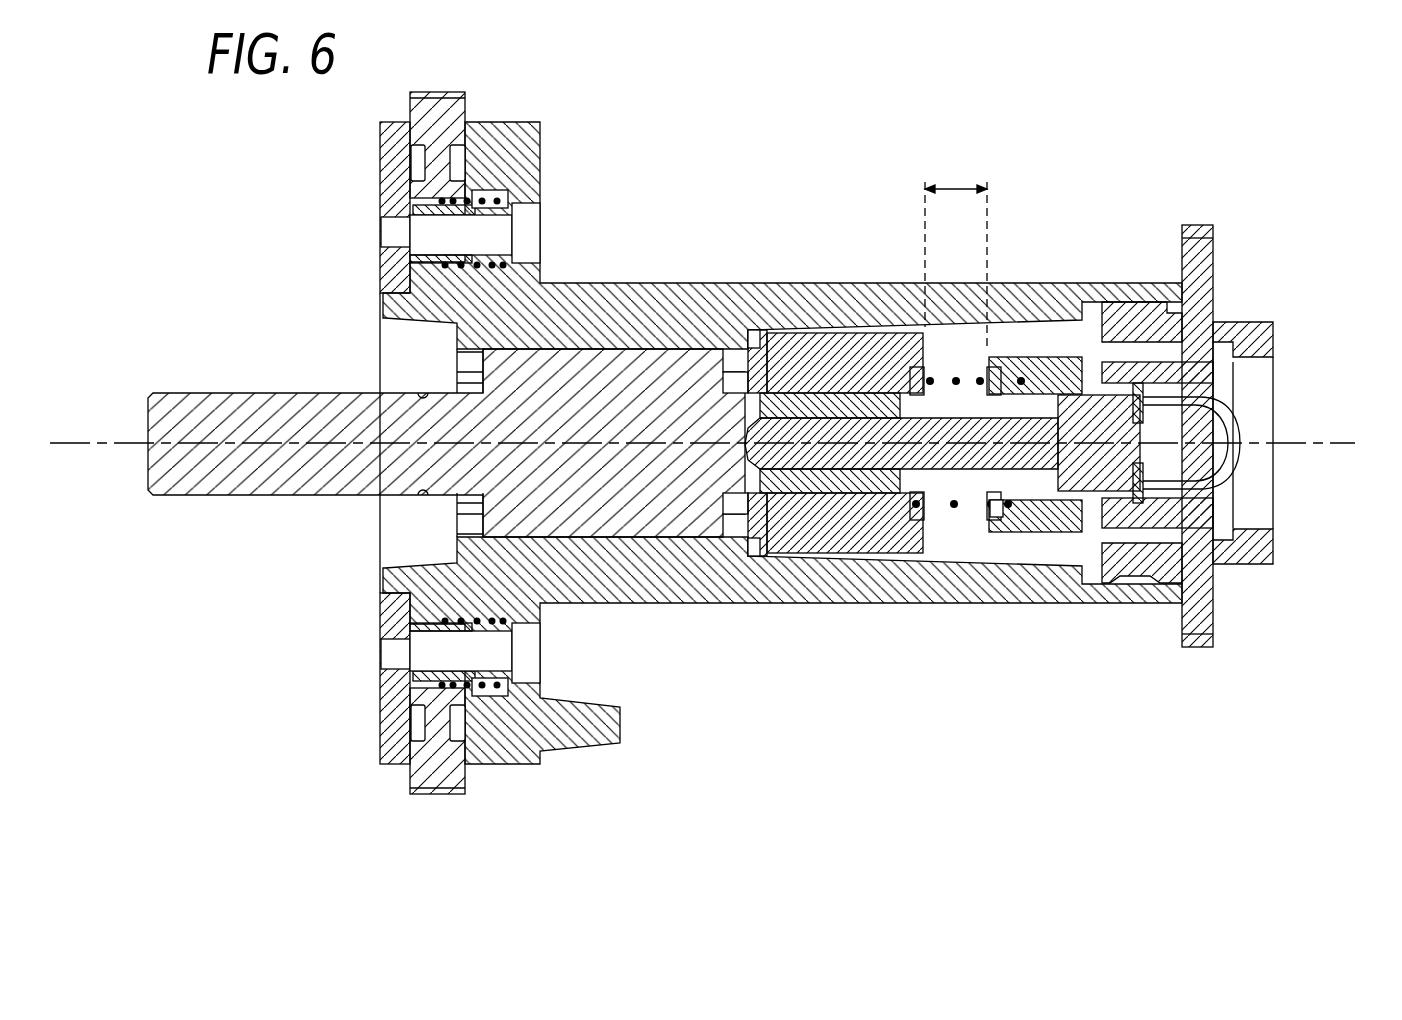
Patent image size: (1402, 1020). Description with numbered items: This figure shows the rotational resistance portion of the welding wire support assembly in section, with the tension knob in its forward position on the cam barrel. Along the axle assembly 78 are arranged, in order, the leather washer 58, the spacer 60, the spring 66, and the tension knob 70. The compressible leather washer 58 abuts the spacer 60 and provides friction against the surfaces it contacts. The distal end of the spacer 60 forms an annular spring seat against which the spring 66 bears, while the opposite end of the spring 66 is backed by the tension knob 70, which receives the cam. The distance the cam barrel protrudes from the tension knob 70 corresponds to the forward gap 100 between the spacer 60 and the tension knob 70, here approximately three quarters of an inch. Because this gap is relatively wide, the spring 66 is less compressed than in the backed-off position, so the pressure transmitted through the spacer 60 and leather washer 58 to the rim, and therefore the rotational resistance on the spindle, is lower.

The leather washer 58 is at (760, 358).
The spacer 60 is at (845, 537).
The spring 66 is at (955, 506).
The tension knob 70 is at (1057, 520).
The axle assembly 78 is at (805, 470).
The forward gap 100 is at (957, 182).